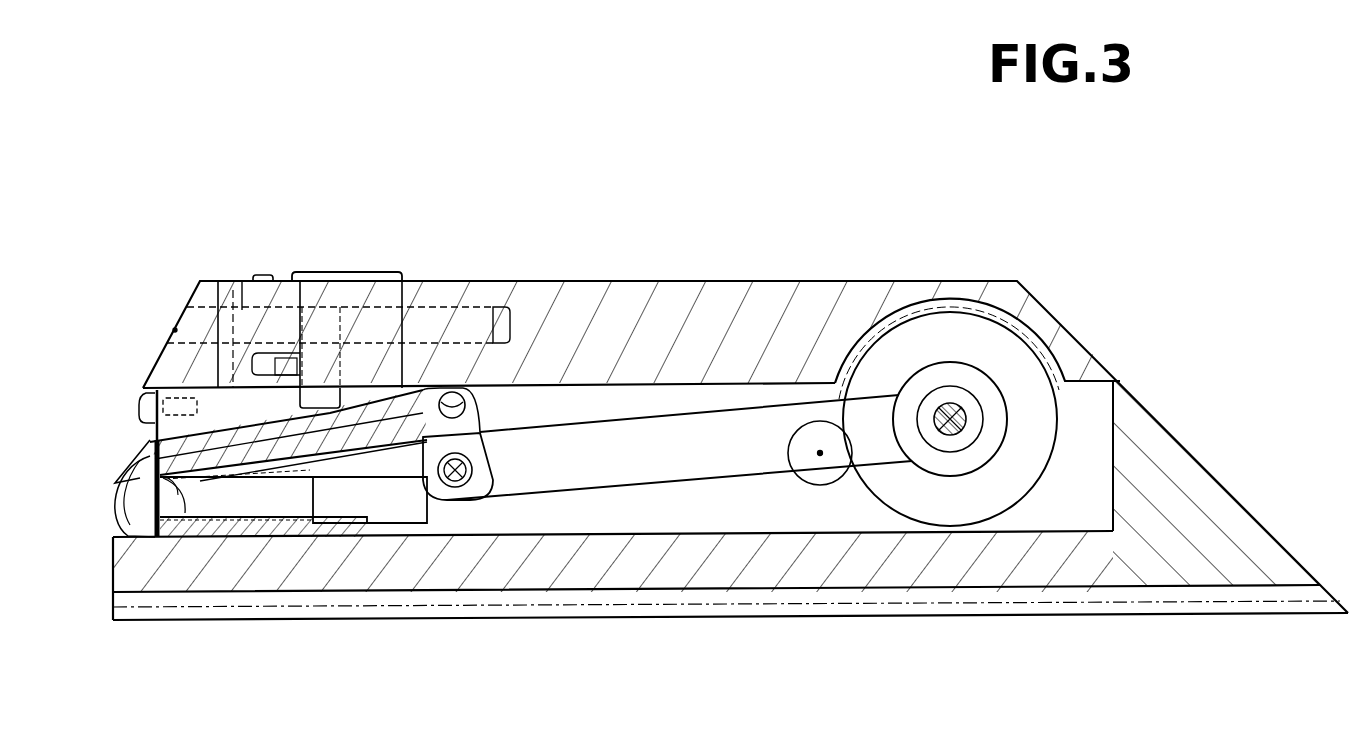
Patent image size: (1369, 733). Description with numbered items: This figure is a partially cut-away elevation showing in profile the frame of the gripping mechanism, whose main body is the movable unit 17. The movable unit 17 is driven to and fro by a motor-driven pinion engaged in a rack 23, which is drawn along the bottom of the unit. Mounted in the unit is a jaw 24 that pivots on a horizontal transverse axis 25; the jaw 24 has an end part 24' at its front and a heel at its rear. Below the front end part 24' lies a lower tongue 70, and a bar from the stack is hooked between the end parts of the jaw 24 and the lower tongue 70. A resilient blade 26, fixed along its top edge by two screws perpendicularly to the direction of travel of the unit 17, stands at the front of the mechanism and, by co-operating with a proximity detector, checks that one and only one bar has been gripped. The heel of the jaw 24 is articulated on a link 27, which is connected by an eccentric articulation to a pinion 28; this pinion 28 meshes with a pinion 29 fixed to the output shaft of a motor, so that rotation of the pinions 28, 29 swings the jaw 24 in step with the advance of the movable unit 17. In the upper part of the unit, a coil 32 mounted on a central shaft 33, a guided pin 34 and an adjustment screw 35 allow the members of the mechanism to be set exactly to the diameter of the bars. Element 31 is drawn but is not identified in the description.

The movable unit 17 is at (1087, 343).
The rack 23 is at (517, 617).
The jaw 24 is at (321, 546).
The end part of the jaw 24' is at (94, 482).
The horizontal transverse axis 25 is at (477, 399).
The resilient blade 26 is at (130, 528).
The link 27 is at (634, 474).
The pinion 28 is at (958, 505).
The pinion 29 is at (821, 486).
The plate 31 is at (300, 523).
The coil 32 is at (331, 272).
The central shaft 33 is at (173, 328).
The guided pin 34 is at (232, 283).
The adjustment screw 35 is at (318, 398).
The lower tongue 70 is at (185, 500).